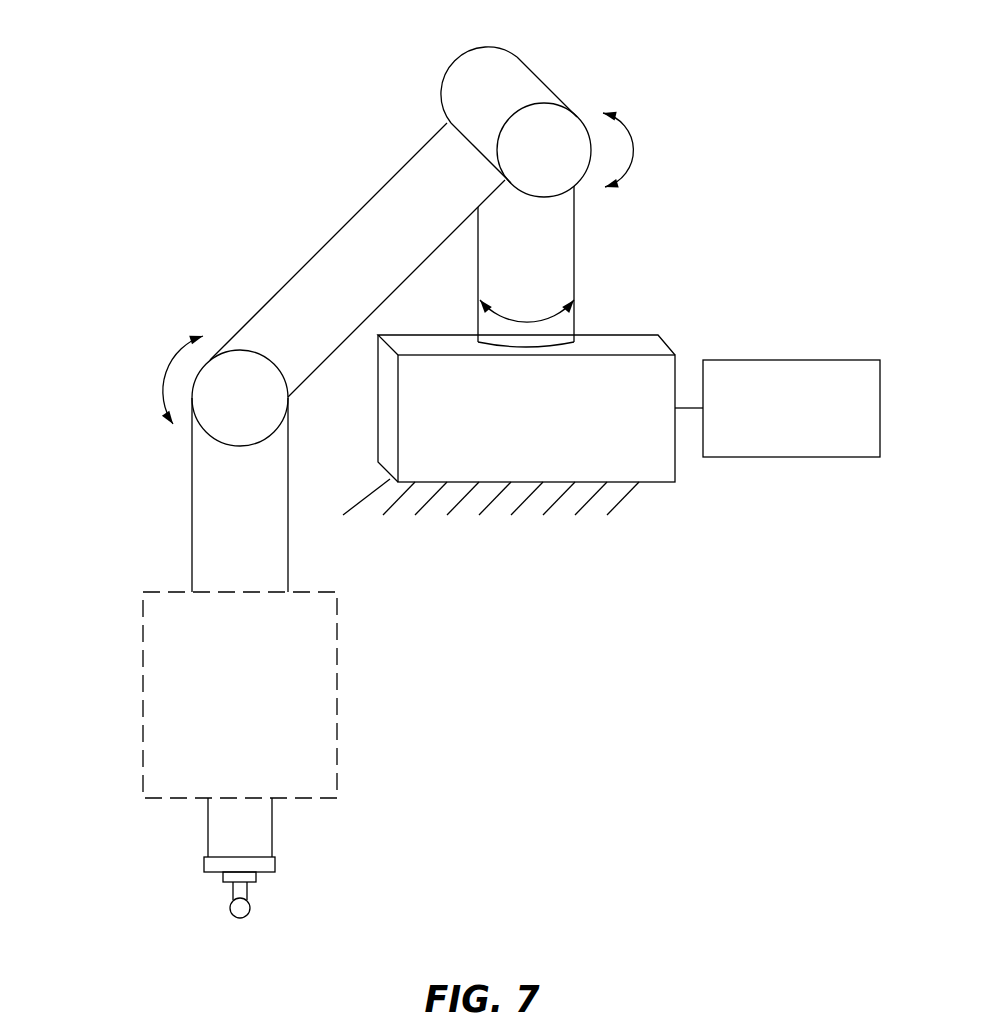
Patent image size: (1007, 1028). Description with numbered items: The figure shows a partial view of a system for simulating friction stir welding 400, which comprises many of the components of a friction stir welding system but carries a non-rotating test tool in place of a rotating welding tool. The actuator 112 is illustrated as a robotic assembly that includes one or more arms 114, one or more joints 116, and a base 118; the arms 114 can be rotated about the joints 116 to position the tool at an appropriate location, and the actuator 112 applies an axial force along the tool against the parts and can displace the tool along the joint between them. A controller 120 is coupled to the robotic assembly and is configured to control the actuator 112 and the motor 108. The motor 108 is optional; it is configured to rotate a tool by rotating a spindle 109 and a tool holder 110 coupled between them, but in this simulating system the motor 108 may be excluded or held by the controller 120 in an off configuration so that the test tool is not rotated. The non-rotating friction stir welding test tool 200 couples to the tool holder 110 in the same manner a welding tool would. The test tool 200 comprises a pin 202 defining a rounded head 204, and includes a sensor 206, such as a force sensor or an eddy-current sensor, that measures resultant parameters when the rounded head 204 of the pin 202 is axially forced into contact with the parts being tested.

The system for simulating friction stir welding 400 is at (443, 488).
The actuator 112 is at (351, 260).
The arms 114 is at (387, 389).
The joints 116 is at (406, 235).
The base 118 is at (570, 446).
The controller 120 is at (777, 378).
The motor 108 is at (188, 695).
The spindle 109 is at (165, 827).
The tool holder 110 is at (188, 859).
The non-rotating friction stir welding test tool 200 is at (236, 912).
The sensor 206 is at (182, 887).
The pin 202 is at (192, 904).
The rounded head 204 is at (199, 925).